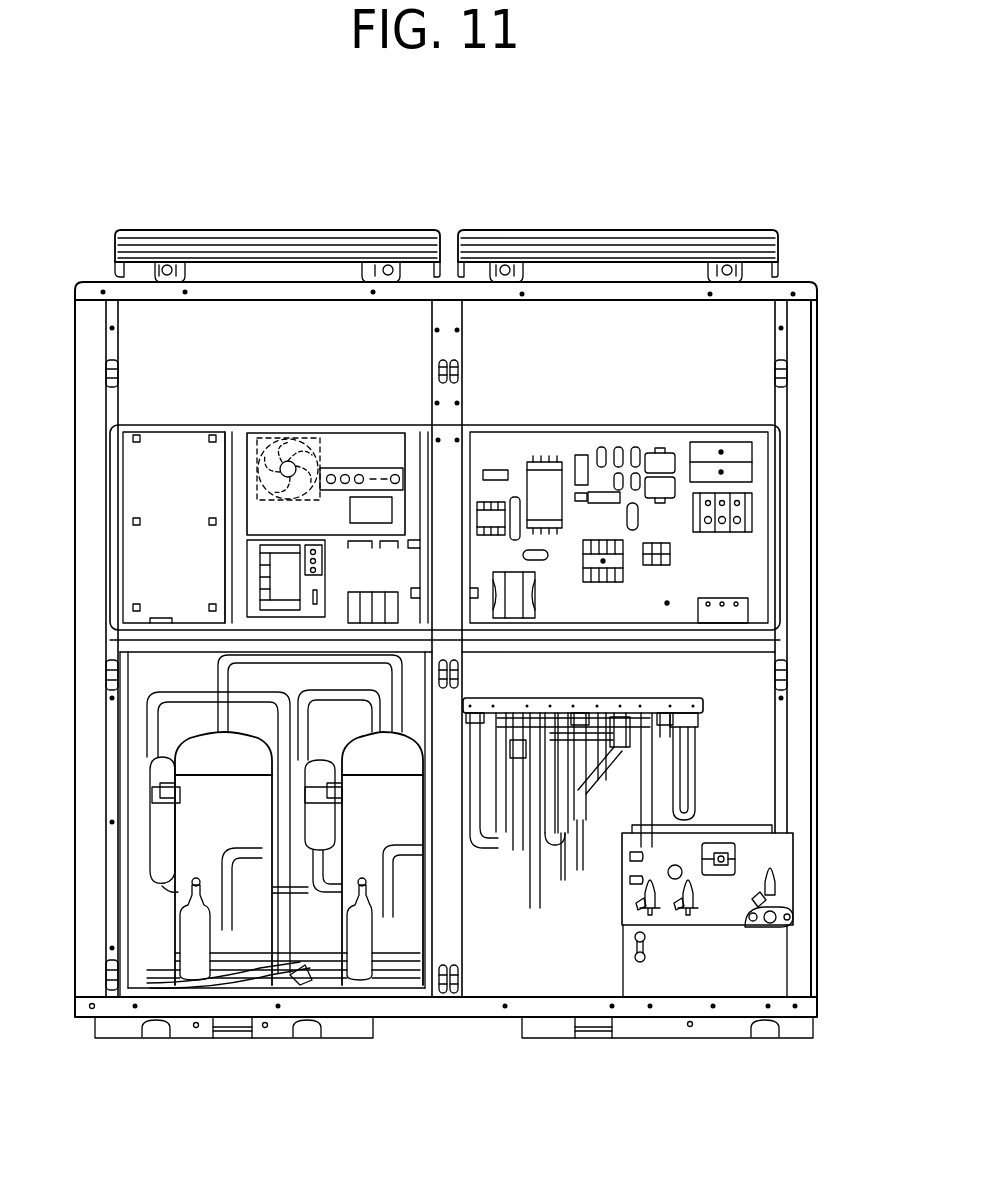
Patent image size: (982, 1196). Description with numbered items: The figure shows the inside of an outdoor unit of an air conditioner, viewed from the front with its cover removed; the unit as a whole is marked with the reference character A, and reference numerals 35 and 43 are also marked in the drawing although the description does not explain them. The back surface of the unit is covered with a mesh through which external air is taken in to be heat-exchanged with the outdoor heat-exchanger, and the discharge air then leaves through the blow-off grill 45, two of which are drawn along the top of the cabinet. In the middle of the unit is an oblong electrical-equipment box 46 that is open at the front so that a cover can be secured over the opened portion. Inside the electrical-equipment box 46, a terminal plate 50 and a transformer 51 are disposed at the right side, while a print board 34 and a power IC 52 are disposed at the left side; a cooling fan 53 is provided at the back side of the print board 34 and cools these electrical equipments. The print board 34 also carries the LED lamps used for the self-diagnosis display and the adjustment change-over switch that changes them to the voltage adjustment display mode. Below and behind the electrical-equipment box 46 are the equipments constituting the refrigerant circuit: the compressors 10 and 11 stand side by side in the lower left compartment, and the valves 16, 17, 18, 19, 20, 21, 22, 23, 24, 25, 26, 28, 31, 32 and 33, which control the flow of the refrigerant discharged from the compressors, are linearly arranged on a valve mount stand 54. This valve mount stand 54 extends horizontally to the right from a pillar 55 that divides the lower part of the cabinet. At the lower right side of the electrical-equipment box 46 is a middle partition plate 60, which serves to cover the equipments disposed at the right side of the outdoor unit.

The outdoor unit A is at (107, 193).
The compressor 10 is at (380, 462).
The compressor 11 is at (375, 858).
The valve 16 is at (557, 698).
The valve 17 is at (501, 772).
The valve 18 is at (518, 781).
The valve 19 is at (535, 810).
The valve 20 is at (555, 779).
The valve 21 is at (563, 796).
The valve 22 is at (580, 791).
The valve 23 is at (602, 746).
The valve 24 is at (620, 730).
The valve 25 is at (646, 780).
The valve 26 is at (665, 725).
The valve 28 is at (670, 698).
The valve 31 is at (573, 722).
The valve 32 is at (581, 736).
The valve 33 is at (600, 770).
The print board 34 is at (352, 445).
The control circuit 35 is at (390, 508).
The partition plate 43 is at (413, 447).
The blow-off grill 45 is at (378, 232).
The electrical-equipment box 46 is at (760, 457).
The terminal plate 50 is at (752, 502).
The transformer 51 is at (510, 576).
The power IC 52 is at (283, 582).
The cooling fan 53 is at (293, 430).
The valve mount stand 54 is at (703, 703).
The pillar 55 is at (452, 893).
The middle partition plate 60 is at (752, 790).